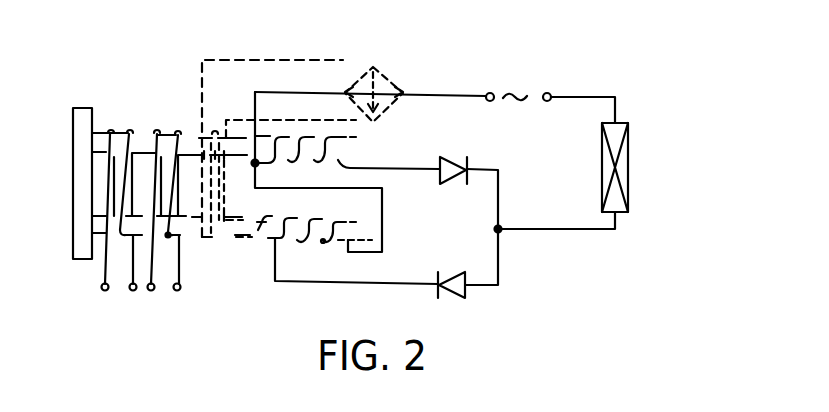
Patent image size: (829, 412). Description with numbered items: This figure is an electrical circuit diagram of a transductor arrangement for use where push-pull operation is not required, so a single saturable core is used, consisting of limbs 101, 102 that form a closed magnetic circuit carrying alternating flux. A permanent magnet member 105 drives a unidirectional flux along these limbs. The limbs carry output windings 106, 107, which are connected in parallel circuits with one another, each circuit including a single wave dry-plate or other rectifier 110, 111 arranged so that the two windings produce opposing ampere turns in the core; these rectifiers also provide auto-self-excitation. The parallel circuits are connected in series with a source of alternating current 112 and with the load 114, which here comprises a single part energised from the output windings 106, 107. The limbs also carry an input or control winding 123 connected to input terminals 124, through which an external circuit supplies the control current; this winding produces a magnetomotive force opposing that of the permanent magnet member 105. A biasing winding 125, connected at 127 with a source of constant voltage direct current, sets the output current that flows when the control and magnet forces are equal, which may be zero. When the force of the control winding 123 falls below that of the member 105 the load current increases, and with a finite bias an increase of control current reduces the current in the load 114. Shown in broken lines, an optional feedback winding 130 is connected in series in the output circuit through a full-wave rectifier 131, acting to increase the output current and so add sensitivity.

The permanent magnet member 105 is at (89, 108).
The input or control winding 123 is at (112, 131).
The biasing winding 125 is at (158, 130).
The input terminals 124 is at (104, 291).
The biasing winding connections 127 is at (152, 291).
The feedback winding 130 is at (219, 224).
The full-wave rectifier 131 is at (422, 82).
The output winding 106 is at (310, 135).
The saturable core limb 101 is at (352, 152).
The saturable core limb 102 is at (271, 212).
The output winding 107 is at (325, 243).
The single wave rectifier 110 is at (452, 157).
The single wave rectifier 111 is at (458, 272).
The source of alternating current 112 is at (489, 93).
The load 114 is at (605, 183).